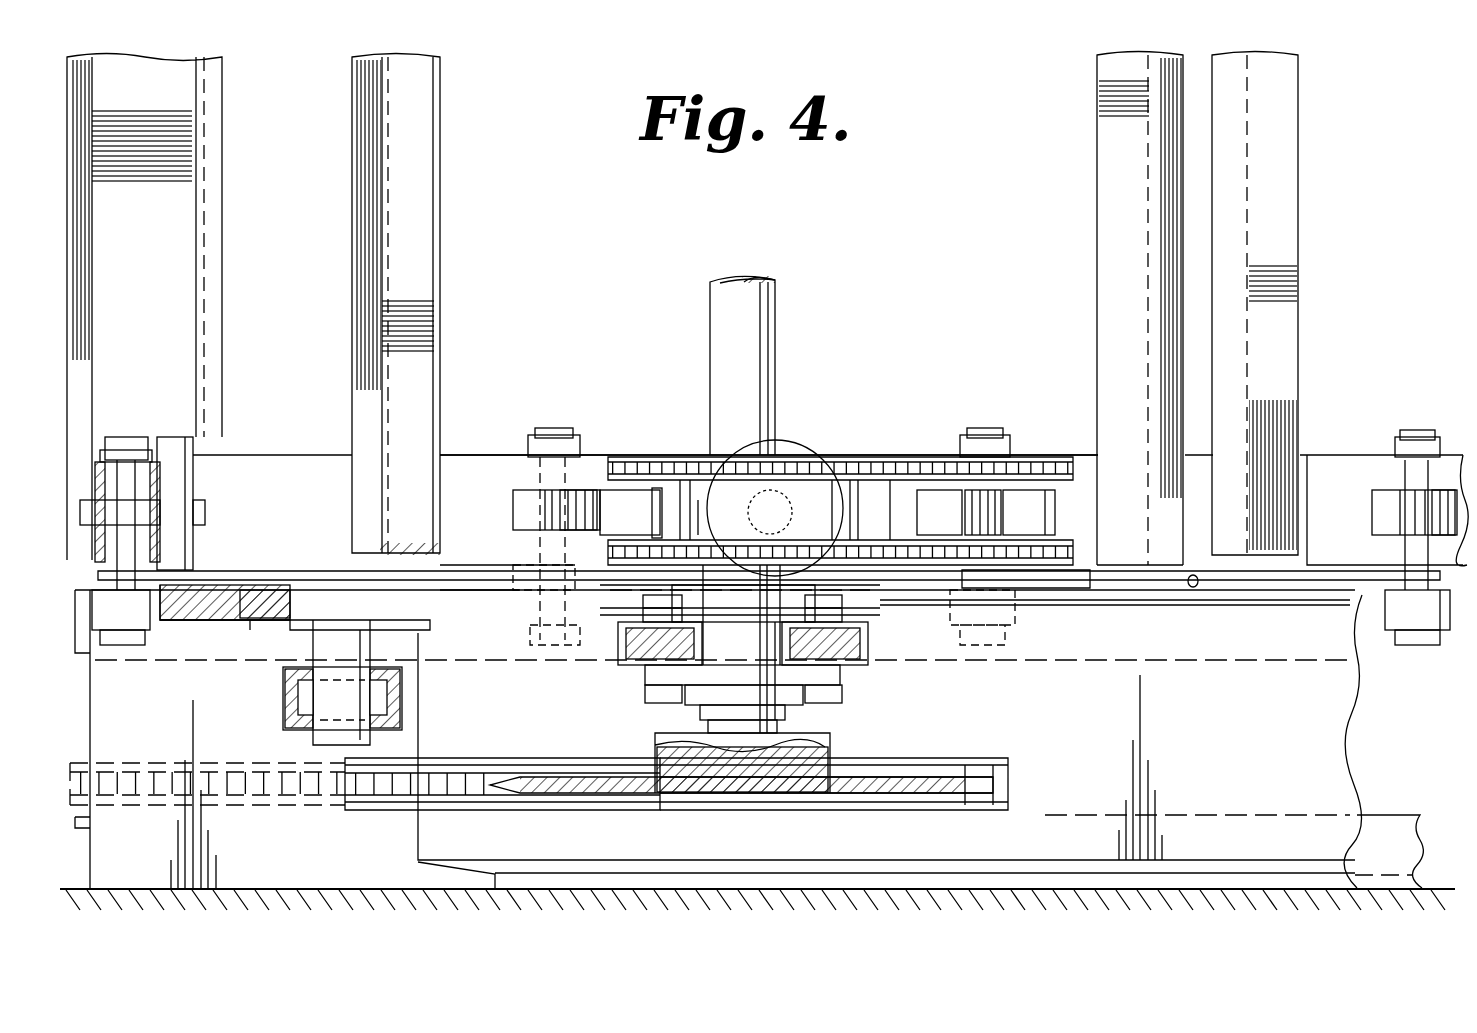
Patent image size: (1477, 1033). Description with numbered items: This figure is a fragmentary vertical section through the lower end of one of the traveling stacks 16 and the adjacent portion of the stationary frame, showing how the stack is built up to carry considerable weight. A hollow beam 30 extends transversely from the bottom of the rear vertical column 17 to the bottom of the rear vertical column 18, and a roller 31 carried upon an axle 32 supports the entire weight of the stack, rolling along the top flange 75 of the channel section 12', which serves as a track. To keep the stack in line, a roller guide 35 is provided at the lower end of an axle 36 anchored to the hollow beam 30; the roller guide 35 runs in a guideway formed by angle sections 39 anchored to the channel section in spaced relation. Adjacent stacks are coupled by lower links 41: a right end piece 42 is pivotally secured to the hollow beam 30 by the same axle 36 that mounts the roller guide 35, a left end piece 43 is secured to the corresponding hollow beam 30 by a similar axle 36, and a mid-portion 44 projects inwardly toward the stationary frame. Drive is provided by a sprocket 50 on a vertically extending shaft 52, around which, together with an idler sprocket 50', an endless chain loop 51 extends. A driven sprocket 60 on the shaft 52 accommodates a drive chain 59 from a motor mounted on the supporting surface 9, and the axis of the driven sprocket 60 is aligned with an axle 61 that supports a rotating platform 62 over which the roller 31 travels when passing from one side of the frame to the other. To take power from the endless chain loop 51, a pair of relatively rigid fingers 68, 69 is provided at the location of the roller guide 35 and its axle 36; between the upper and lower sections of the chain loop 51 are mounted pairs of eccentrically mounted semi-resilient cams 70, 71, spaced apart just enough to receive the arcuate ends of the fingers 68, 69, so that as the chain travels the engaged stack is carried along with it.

The supporting surface 9 is at (1427, 888).
The channel section 12' is at (771, 696).
The stack 16 is at (248, 144).
The rear vertical column 17 is at (416, 231).
The rear vertical column 18 is at (176, 225).
The hollow beam 30 is at (85, 455).
The roller 31 is at (773, 442).
The axle 32 is at (147, 503).
The roller guide 35 is at (118, 612).
The axle 36 is at (110, 437).
The angle section 39 is at (1367, 675).
The lower link 41 is at (320, 575).
The right end piece 42 is at (520, 568).
The left end piece 43 is at (210, 585).
The mid-portion 44 is at (340, 572).
The sprocket 50 is at (793, 554).
The idler sprocket 50' is at (1004, 641).
The endless chain loop 51 is at (1060, 455).
The shaft 52 is at (739, 298).
The drive chain 59 is at (385, 793).
The driven sprocket 60 is at (620, 785).
The axle 61 is at (348, 696).
The rotating platform 62 is at (260, 618).
The finger 68 is at (583, 490).
The finger 69 is at (530, 519).
The cam 70 is at (1050, 512).
The cam 71 is at (668, 508).
The top flange 75 is at (1193, 588).